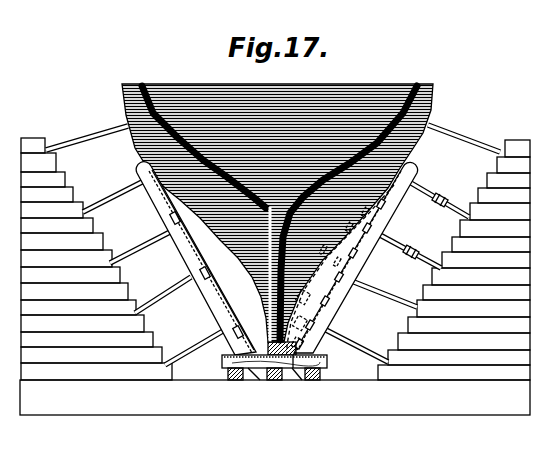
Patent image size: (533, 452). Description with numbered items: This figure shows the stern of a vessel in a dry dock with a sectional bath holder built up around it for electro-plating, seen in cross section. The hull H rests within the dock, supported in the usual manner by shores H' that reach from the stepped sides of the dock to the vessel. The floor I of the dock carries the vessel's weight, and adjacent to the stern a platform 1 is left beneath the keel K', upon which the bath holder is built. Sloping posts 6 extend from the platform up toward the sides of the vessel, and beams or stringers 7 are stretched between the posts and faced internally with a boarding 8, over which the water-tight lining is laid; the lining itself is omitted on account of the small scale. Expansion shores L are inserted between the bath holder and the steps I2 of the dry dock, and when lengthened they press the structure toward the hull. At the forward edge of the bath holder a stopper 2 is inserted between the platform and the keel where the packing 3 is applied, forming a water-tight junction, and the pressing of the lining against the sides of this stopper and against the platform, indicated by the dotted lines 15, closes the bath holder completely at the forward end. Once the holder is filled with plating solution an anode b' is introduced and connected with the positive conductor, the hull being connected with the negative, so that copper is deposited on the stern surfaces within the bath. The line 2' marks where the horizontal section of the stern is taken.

The hull H is at (277, 202).
The shores H' is at (273, 132).
The floor I is at (275, 397).
The steps I2 is at (66, 174).
The section line 2' is at (258, 273).
The expansion shores L is at (437, 198).
The sloping posts 6 is at (178, 248).
The beams or stringers 7 is at (208, 280).
The boarding 8 is at (223, 293).
The anode b' is at (203, 260).
The packing 3 is at (344, 262).
The stopper 2 is at (309, 281).
The keel K' is at (254, 274).
The platform 1 is at (328, 362).
The dotted lines 15 is at (293, 358).